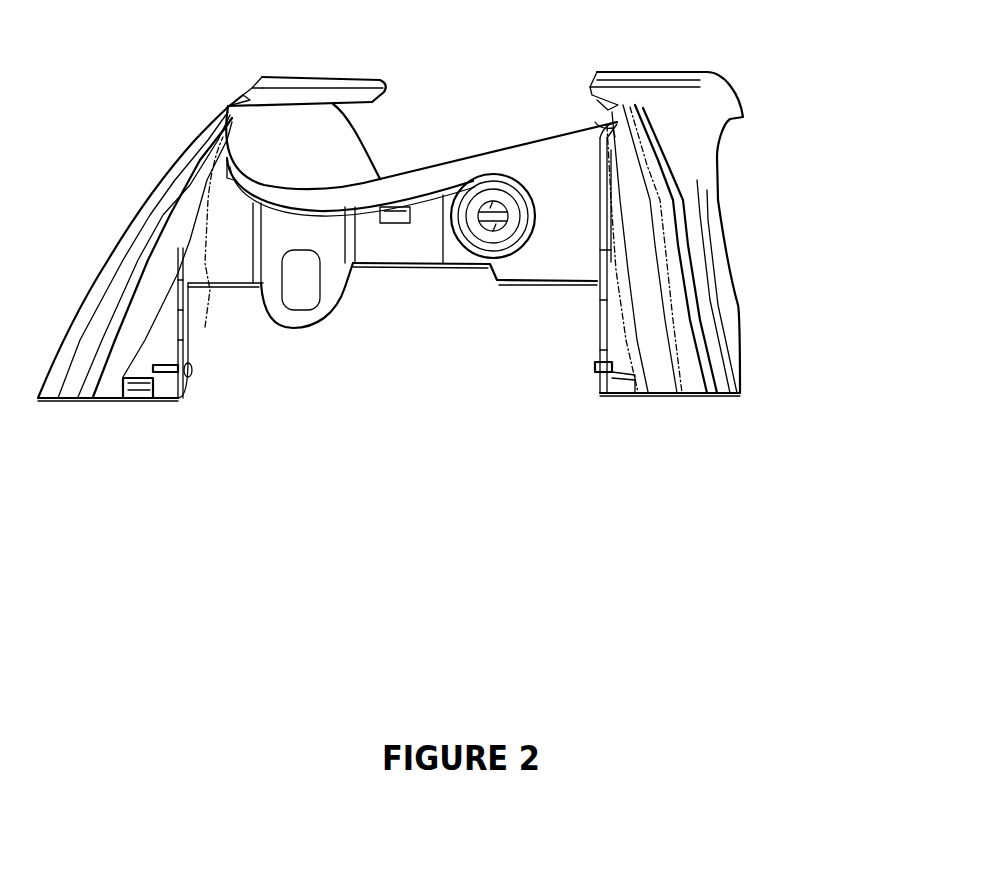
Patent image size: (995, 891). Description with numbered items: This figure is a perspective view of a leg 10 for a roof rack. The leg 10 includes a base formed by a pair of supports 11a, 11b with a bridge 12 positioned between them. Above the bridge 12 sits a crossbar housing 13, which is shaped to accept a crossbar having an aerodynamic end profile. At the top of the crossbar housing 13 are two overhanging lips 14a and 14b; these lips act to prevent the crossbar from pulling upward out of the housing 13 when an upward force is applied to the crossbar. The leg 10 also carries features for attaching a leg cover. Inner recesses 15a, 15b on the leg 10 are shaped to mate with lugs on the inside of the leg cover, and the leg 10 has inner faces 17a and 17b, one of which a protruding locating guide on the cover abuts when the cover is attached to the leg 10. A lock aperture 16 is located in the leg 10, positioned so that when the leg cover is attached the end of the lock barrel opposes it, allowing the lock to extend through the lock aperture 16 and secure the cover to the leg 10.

The leg 10 is at (742, 223).
The support 11a is at (97, 378).
The support 11b is at (683, 367).
The bridge 12 is at (378, 252).
The crossbar housing 13 is at (337, 152).
The overhanging lip 14a is at (295, 82).
The overhanging lip 14b is at (622, 80).
The inner recess 15a is at (165, 385).
The inner recess 15b is at (600, 388).
The lock aperture 16 is at (295, 290).
The inner face 17a is at (190, 318).
The inner face 17b is at (593, 348).